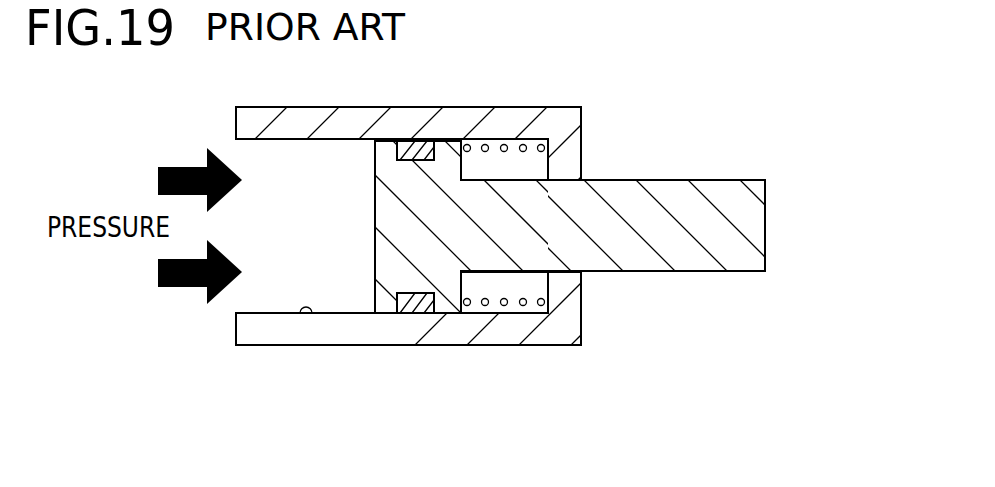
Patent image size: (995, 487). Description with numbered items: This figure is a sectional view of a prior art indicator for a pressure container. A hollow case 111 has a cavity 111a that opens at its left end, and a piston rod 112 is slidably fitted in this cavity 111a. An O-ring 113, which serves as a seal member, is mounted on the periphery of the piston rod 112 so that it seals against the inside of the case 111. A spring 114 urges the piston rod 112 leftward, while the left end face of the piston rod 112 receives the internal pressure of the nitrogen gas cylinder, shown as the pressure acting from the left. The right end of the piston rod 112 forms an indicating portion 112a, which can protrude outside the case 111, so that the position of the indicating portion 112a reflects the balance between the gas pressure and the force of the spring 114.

The hollow case 111 is at (594, 248).
The cavity 111a is at (298, 313).
The piston rod 112 is at (388, 195).
The indicating portion 112a is at (690, 180).
The O-ring 113 is at (418, 313).
The spring 114 is at (515, 147).